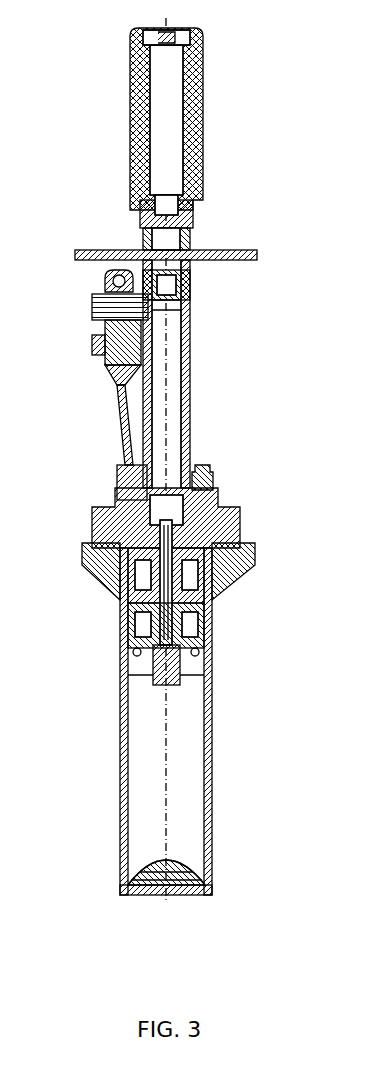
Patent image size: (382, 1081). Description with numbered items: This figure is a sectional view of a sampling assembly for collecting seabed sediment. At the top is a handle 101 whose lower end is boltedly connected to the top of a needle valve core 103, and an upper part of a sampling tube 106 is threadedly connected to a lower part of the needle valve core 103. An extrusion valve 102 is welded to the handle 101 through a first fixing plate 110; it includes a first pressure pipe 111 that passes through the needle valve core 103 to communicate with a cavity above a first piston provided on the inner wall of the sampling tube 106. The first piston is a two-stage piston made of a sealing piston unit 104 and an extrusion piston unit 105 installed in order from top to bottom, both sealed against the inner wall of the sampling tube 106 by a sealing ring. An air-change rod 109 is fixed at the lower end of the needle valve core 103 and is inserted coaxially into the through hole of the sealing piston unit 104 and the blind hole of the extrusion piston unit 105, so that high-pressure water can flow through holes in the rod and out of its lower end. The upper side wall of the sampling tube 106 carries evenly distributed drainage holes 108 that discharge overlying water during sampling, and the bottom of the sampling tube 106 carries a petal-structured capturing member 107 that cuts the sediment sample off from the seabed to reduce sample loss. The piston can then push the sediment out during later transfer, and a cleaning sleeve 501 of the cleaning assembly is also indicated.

The handle 101 is at (130, 72).
The extrusion valve 102 is at (108, 347).
The needle valve core 103 is at (100, 505).
The sealing piston unit 104 is at (90, 570).
The extrusion piston unit 105 is at (124, 630).
The sampling tube 106 is at (128, 720).
The capturing member 107 is at (128, 885).
The drainage holes 108 is at (214, 662).
The air-change rod 109 is at (202, 606).
The first fixing plate 110 is at (147, 340).
The first pressure pipe 111 is at (126, 448).
The cleaning sleeve 501 is at (245, 555).